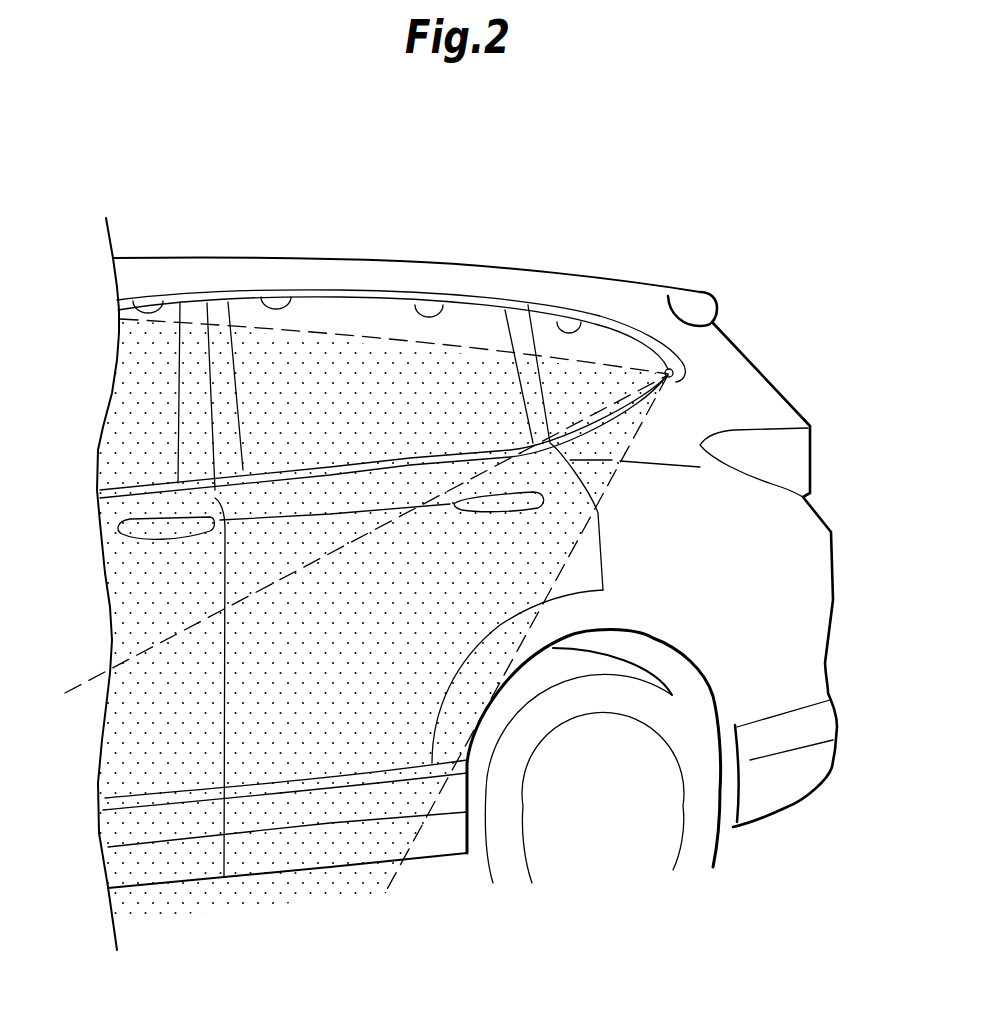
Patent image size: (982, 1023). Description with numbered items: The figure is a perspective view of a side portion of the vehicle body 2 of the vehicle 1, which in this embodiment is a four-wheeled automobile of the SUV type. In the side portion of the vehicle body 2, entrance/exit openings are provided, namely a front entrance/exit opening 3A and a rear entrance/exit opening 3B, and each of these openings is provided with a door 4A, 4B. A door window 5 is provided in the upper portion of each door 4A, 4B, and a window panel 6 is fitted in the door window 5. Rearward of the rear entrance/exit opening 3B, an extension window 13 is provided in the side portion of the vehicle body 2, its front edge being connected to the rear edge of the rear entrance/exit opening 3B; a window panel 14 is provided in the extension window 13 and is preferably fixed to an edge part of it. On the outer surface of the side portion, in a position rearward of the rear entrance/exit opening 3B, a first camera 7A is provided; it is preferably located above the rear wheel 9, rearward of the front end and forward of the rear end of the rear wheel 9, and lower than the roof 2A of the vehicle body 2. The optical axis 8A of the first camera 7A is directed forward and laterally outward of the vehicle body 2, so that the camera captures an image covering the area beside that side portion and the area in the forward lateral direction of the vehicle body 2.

The vehicle 1 is at (124, 212).
The vehicle body 2 is at (827, 557).
The roof 2A is at (223, 263).
The front entrance/exit opening 3A is at (163, 302).
The rear entrance/exit opening 3B is at (287, 293).
The door window 5 is at (447, 307).
The extension window 13 is at (557, 320).
The window panel 6 is at (365, 320).
The window panel 14 is at (598, 347).
The first camera 7A is at (676, 382).
The optical axis 8A is at (349, 634).
The door 4A is at (135, 718).
The door 4B is at (260, 753).
The rear wheel 9 is at (710, 843).